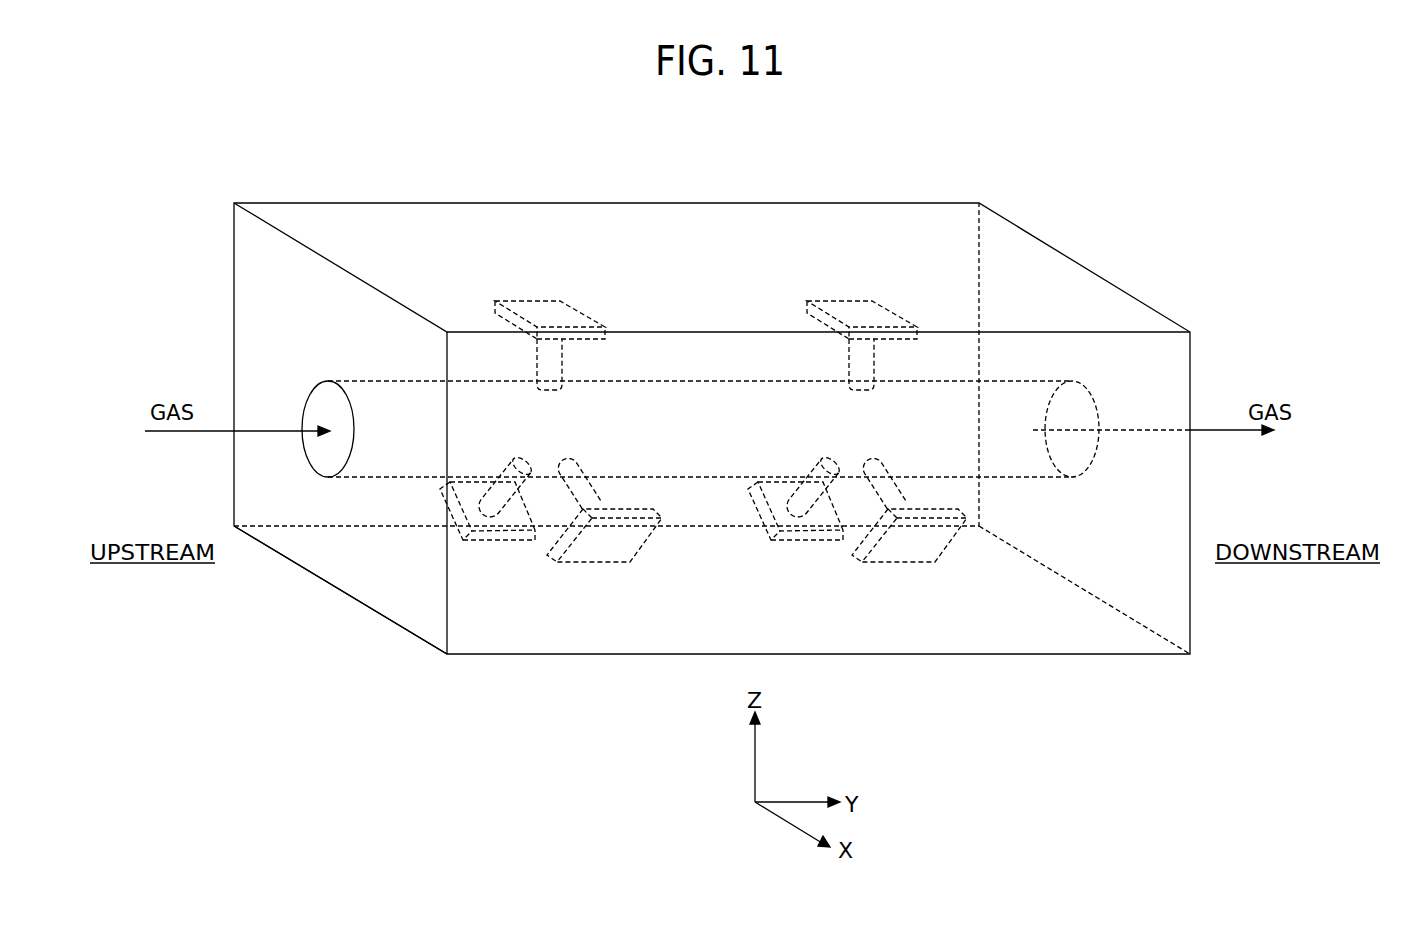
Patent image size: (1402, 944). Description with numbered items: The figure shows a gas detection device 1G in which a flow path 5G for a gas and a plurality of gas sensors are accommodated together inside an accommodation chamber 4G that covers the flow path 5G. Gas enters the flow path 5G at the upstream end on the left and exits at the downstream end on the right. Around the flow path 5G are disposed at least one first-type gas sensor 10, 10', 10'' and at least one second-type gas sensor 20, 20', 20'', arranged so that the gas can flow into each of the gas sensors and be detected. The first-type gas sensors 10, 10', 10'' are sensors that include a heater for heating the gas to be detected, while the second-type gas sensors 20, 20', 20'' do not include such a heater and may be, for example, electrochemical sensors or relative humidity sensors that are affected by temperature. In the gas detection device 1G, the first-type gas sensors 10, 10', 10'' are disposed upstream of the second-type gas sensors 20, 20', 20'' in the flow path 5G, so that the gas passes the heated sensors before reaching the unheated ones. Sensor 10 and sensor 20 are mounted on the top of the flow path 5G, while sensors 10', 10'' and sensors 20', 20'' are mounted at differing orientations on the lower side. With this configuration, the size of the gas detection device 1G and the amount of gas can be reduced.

The gas detection device 1G is at (752, 172).
The accommodation chamber 4G is at (1045, 243).
The flow path 5G is at (1093, 460).
The gas sensor 10 is at (550, 319).
The first-type gas sensor 10' is at (487, 532).
The first-type gas sensor 10'' is at (604, 542).
The gas sensor 20 is at (862, 319).
The second-type gas sensor 20' is at (795, 525).
The second-type gas sensor 20'' is at (909, 537).